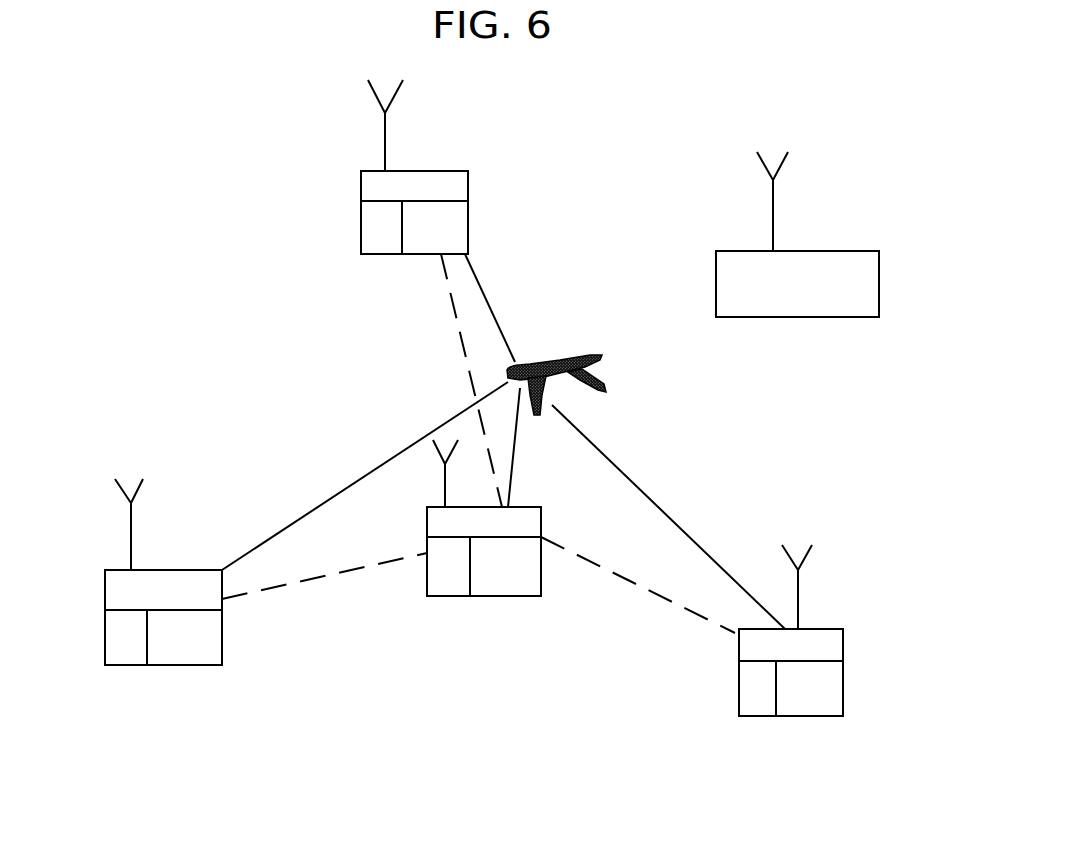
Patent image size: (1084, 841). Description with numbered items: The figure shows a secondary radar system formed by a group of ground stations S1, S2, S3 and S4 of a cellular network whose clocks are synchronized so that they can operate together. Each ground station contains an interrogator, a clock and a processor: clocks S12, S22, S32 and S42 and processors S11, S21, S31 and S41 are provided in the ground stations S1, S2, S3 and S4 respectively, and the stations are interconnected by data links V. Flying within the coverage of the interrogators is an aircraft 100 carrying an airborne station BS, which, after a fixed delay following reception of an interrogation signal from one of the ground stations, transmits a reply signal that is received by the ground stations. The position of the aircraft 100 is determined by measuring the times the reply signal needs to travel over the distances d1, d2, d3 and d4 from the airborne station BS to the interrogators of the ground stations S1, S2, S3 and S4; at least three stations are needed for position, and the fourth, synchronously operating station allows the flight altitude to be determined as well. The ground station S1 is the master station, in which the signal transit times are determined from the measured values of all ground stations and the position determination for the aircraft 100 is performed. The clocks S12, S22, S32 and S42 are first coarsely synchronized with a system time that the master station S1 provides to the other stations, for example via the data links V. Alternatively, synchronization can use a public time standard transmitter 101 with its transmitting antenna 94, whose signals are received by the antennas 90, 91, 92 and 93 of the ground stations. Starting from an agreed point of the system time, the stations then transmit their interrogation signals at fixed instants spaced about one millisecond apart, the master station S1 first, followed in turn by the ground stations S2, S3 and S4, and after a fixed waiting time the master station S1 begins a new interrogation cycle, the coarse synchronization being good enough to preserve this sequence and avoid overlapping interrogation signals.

The antenna 90 is at (798, 592).
The antenna 91 is at (445, 482).
The antenna 92 is at (131, 525).
The antenna 93 is at (385, 126).
The transmitting antenna 94 is at (773, 213).
The aircraft 100 is at (563, 371).
The public time standard transmitter 101 is at (838, 317).
The airborne station BS is at (533, 366).
The ground station S1 is at (470, 544).
The ground station S2 is at (446, 189).
The ground station S3 is at (773, 654).
The ground station S4 is at (206, 609).
The processor S11 is at (513, 596).
The clock S12 is at (445, 596).
The processor S21 is at (468, 205).
The clock S22 is at (387, 255).
The processor S31 is at (843, 682).
The clock S32 is at (762, 716).
The processor S41 is at (222, 633).
The clock S42 is at (139, 665).
The distance d1 is at (515, 440).
The distance d2 is at (487, 300).
The distance d3 is at (668, 500).
The distance d4 is at (375, 468).
The data link V is at (462, 342).